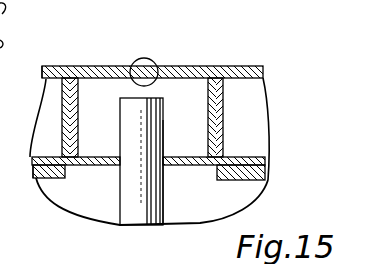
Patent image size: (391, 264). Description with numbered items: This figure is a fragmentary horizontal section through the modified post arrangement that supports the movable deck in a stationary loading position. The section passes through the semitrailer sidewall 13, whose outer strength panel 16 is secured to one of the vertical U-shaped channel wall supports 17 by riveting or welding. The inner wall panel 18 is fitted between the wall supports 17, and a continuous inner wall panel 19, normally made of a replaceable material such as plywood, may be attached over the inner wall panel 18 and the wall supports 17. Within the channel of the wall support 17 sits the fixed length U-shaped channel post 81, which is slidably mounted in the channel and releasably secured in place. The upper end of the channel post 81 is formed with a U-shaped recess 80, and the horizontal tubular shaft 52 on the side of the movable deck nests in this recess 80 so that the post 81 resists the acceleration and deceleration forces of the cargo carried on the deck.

The sidewall 13 is at (48, 80).
The outer strength panel 16 is at (248, 66).
The U-shaped channel wall support 17 is at (226, 115).
The inner wall panel 18 is at (247, 157).
The inner wall lining panel 19 is at (40, 180).
The horizontal tubular shaft 52 is at (133, 215).
The U-shaped recess 80 is at (168, 158).
The U-shaped channel post 81 is at (91, 166).